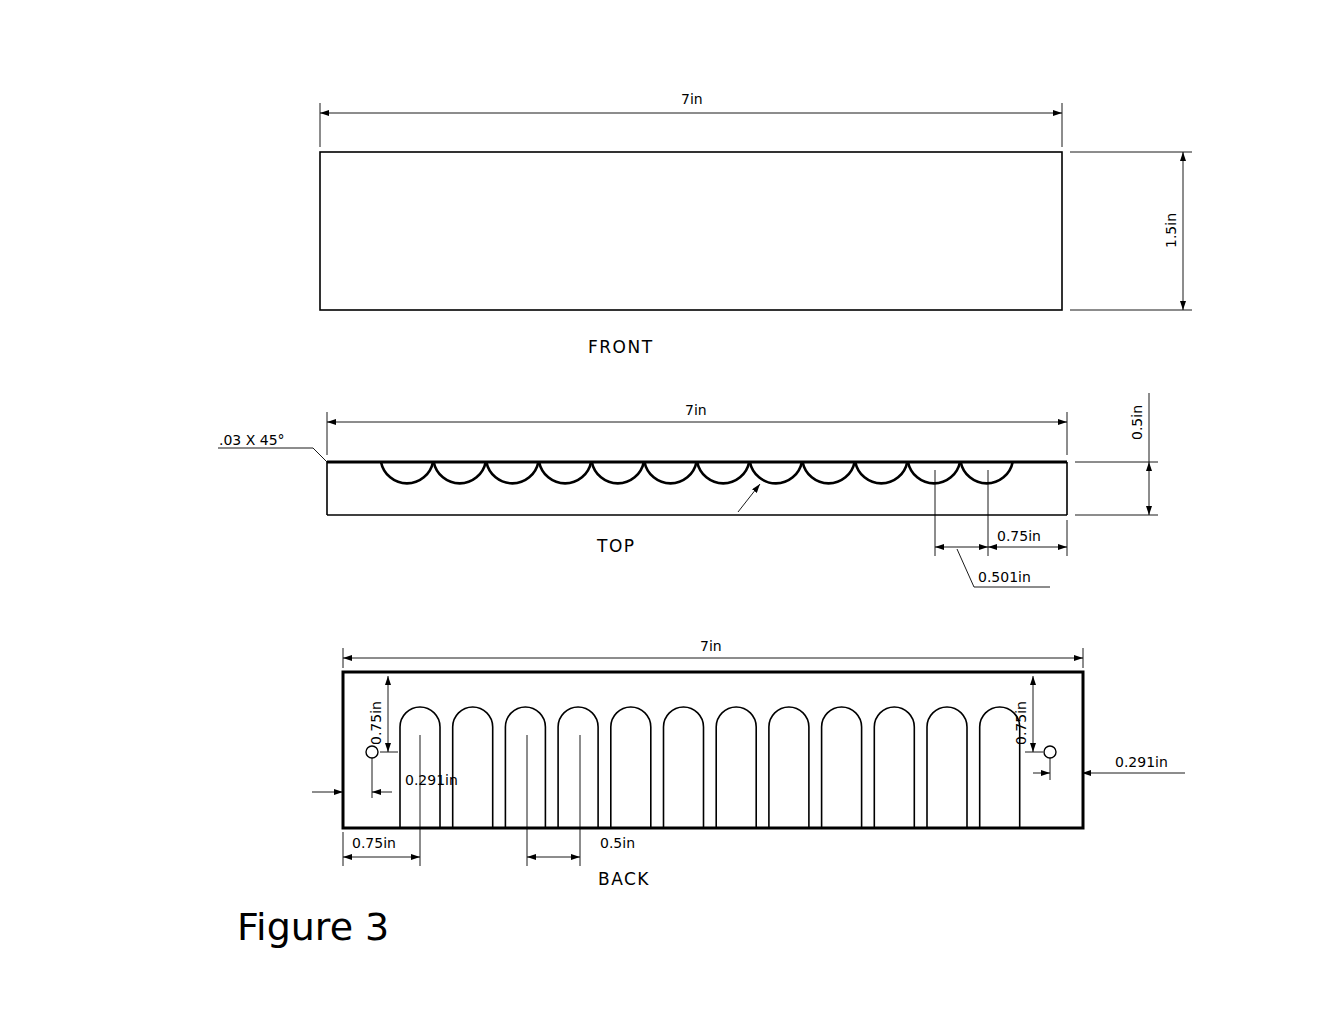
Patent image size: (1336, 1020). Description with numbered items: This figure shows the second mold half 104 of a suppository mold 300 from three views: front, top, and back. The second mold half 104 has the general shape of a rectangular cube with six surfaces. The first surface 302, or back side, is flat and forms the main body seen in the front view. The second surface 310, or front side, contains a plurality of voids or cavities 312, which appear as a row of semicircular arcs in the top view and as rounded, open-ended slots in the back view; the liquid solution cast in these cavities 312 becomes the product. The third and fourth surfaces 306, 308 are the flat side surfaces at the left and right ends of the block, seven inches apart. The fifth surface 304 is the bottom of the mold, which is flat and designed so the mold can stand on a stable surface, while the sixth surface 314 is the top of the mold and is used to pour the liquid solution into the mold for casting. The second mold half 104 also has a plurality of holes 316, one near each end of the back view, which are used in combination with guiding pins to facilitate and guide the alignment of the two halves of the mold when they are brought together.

The second mold half 104 is at (310, 252).
The bar assembly 300 is at (1268, 79).
The first surface 302 is at (1002, 205).
The fifth surface 304 is at (542, 148).
The third surface 306 is at (300, 213).
The fourth surface 308 is at (1085, 196).
The second surface 310 is at (823, 447).
The cavities 312 is at (462, 460).
The sixth surface 314 is at (578, 318).
The holes 316 is at (364, 746).